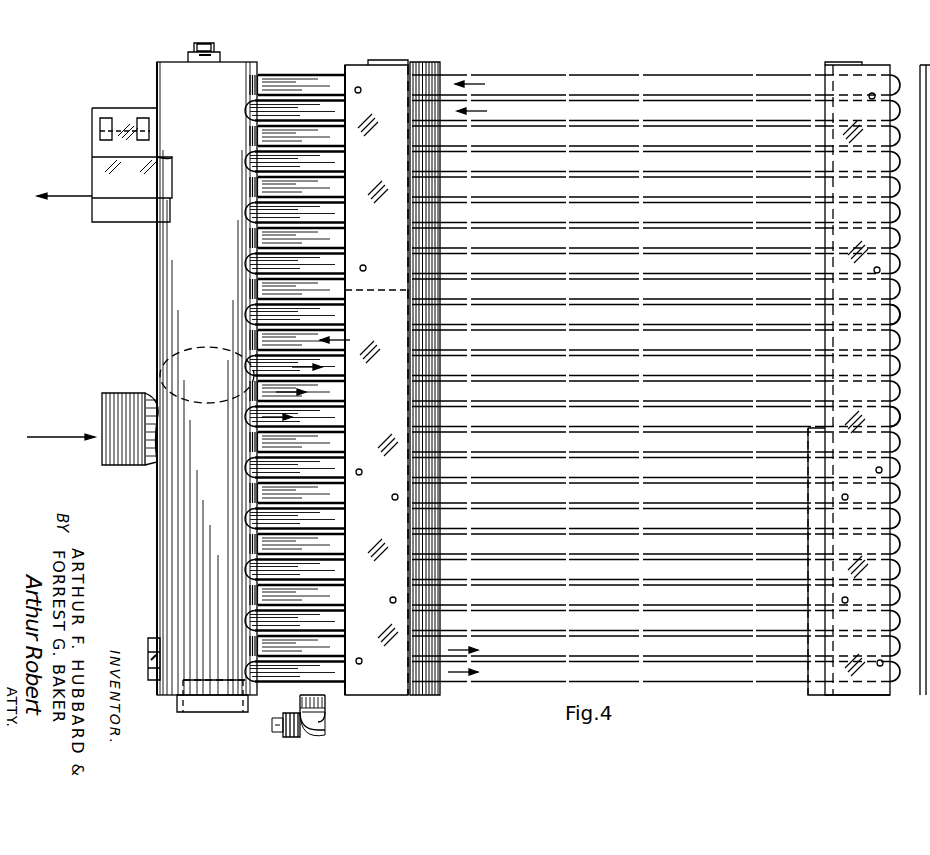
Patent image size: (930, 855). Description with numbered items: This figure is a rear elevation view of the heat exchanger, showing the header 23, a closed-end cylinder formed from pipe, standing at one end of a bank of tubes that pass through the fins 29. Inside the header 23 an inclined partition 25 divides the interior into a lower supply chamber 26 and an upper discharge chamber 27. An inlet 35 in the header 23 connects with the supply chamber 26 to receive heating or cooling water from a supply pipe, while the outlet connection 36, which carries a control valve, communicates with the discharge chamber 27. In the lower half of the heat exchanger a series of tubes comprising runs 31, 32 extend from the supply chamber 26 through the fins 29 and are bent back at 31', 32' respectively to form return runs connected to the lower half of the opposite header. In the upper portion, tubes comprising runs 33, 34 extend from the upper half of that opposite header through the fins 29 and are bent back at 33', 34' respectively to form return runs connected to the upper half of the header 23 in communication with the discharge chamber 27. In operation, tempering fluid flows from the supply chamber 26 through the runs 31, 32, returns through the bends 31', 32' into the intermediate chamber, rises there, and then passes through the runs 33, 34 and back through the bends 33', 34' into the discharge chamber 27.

The header 23 is at (157, 282).
The inclined partition 25 is at (205, 347).
The lower supply chamber 26 is at (187, 580).
The upper discharge chamber 27 is at (186, 237).
The fins 29 is at (440, 66).
The tube run 31 is at (314, 704).
The tube run 32 is at (376, 377).
The tube run 33 is at (572, 384).
The tube run 34 is at (575, 360).
The inlet 35 is at (137, 465).
The outlet connection 36 is at (92, 178).
The bend 31' is at (906, 388).
The bend 32' is at (868, 378).
The bend 33' is at (899, 408).
The bend 34' is at (892, 307).